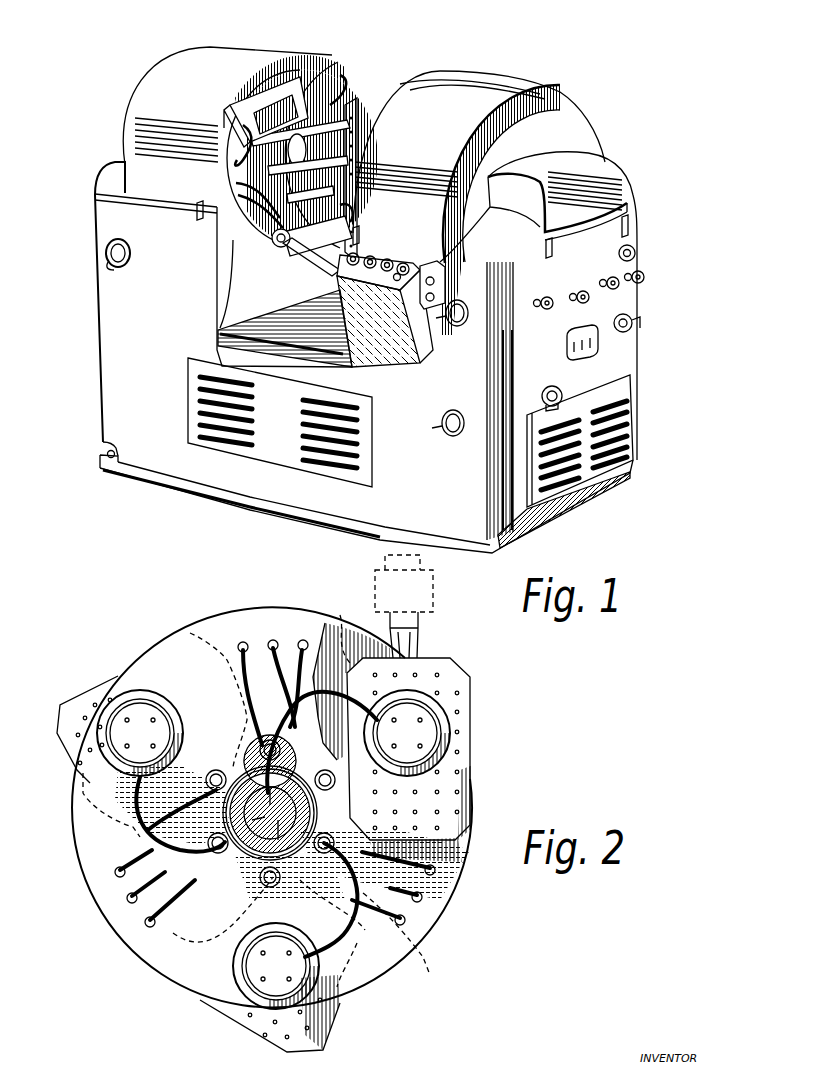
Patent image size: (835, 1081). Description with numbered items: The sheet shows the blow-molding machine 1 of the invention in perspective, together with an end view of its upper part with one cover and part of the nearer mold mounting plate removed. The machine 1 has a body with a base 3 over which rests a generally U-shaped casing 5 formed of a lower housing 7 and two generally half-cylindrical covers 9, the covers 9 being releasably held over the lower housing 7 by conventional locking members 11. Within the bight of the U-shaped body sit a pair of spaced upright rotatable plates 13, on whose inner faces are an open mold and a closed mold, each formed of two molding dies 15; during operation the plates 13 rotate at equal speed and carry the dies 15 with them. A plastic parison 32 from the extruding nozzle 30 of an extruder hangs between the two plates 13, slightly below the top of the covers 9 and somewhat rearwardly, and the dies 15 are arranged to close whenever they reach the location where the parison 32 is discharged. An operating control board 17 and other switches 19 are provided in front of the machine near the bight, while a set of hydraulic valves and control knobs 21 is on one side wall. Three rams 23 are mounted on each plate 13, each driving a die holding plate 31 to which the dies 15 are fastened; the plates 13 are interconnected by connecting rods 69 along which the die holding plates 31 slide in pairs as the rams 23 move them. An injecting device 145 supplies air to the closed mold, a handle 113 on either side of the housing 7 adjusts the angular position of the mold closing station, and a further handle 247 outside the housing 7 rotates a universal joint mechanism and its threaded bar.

In FIG. 1, the machine 1 is at (588, 84).
In FIG. 1, the base 3 is at (607, 495).
In FIG. 1, the U-shaped casing 5 is at (638, 236).
In FIG. 1, the lower housing 7 is at (115, 345).
In FIG. 1, the half-cylindrical covers 9 is at (457, 90).
In FIG. 1, the locking member 11 is at (195, 210).
In FIG. 2, the locking member 11 is at (340, 615).
In FIG. 1, the rotatable plates 13 is at (312, 68).
In FIG. 2, the rotatable plates 13 is at (230, 620).
In FIG. 1, the molding dies 15 is at (285, 100).
In FIG. 1, the operating control board 17 is at (432, 262).
In FIG. 1, the switches 19 is at (460, 307).
In FIG. 1, the hydraulic valves and control knobs 21 is at (553, 305).
In FIG. 2, the rams 23 is at (140, 700).
In FIG. 2, the extruding nozzle 30 is at (436, 598).
In FIG. 2, the die holding plates 31 is at (455, 668).
In FIG. 2, the plastic parison 32 is at (430, 641).
In FIG. 1, the connecting rods 69 is at (330, 105).
In FIG. 2, the connecting rods 69 is at (335, 840).
In FIG. 1, the handle 113 is at (467, 302).
In FIG. 1, the injecting device 145 is at (262, 112).
In FIG. 1, the handle 247 is at (450, 432).